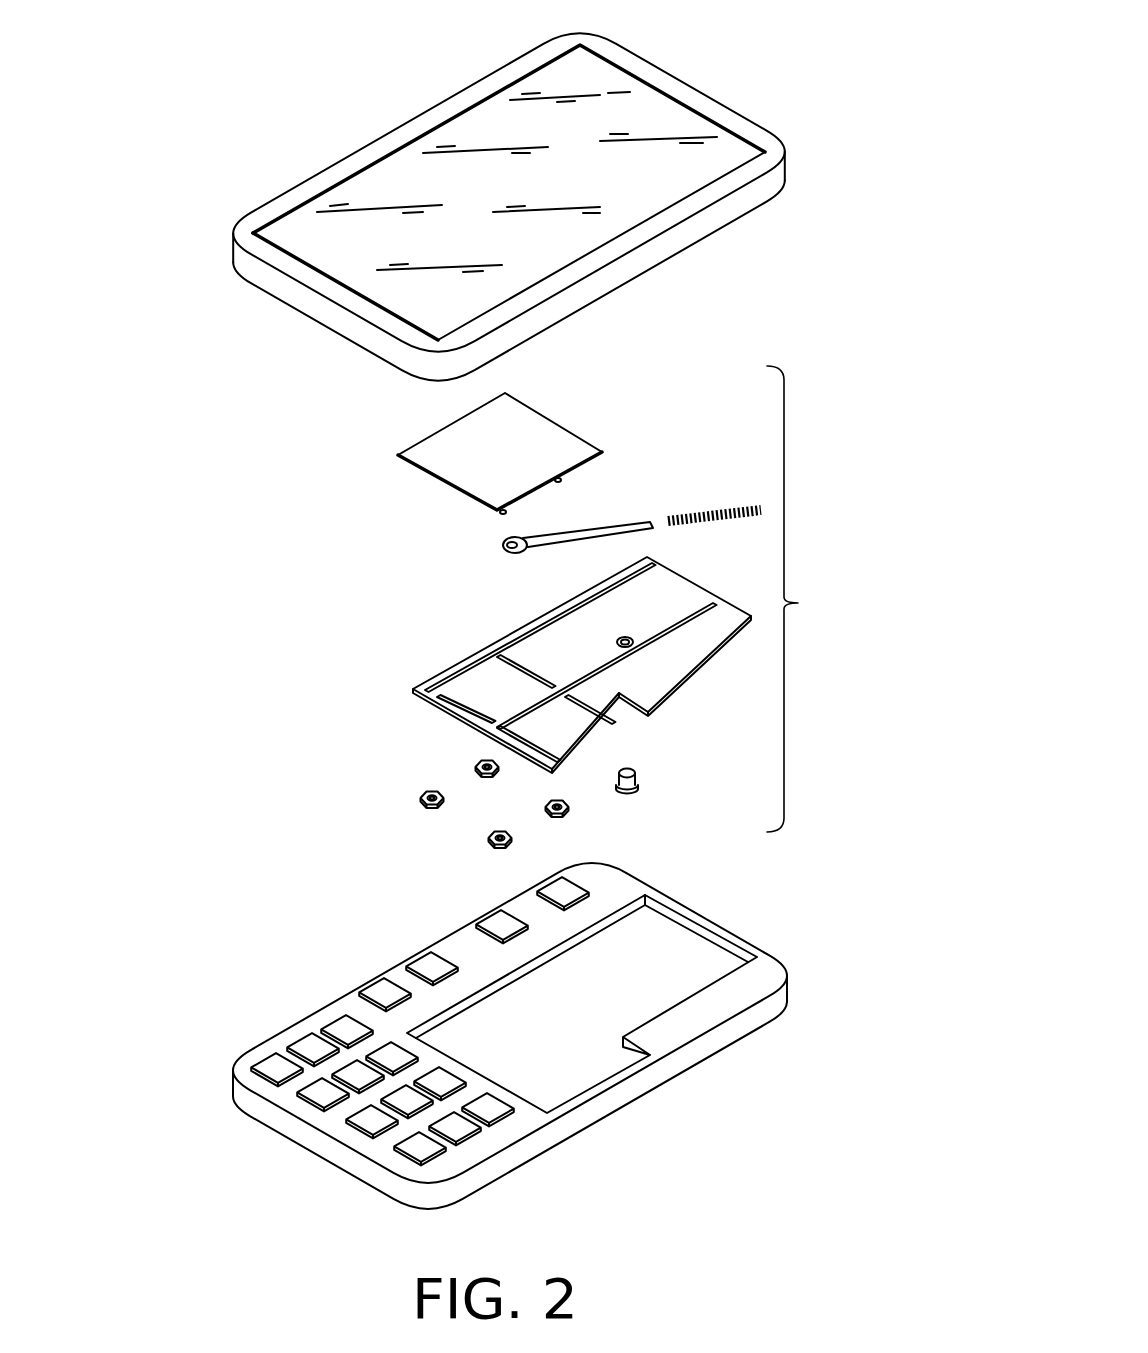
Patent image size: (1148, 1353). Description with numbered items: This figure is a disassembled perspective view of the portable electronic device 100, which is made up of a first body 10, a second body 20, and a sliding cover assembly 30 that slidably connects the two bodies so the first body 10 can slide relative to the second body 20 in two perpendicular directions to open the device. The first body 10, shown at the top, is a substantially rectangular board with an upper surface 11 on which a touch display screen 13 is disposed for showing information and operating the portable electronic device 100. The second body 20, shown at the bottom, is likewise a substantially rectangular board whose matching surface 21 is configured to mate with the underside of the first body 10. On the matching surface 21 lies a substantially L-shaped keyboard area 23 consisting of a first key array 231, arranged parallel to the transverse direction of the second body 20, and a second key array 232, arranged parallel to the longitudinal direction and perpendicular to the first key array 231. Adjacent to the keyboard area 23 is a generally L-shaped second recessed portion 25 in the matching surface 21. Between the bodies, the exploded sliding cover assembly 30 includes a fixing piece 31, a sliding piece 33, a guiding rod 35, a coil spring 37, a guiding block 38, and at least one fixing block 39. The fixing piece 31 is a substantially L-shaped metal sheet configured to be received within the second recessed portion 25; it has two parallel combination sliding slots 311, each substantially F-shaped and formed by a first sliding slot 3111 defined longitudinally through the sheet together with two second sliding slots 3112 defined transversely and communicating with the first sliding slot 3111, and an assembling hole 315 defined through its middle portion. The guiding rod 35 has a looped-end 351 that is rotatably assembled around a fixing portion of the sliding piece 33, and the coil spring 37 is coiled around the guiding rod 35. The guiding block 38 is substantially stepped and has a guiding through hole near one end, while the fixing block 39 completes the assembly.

The portable electronic device 100 is at (497, 604).
The first body 10 is at (519, 206).
The upper surface 11 is at (728, 118).
The touch display screen 13 is at (383, 193).
The second body 20 is at (497, 1036).
The matching surface 21 is at (745, 995).
The keyboard area 23 is at (368, 1021).
The first key array 231 is at (278, 1072).
The second key array 232 is at (387, 993).
The second recessed portion 25 is at (688, 955).
The sliding cover assembly 30 is at (559, 607).
The fixing piece 31 is at (514, 665).
The combination sliding slot 311 is at (466, 647).
The first sliding slot 3111 is at (460, 665).
The second sliding slot 3112 is at (447, 713).
The assembling hole 315 is at (622, 638).
The sliding piece 33 is at (533, 447).
The guiding rod 35 is at (523, 513).
The looped-end 351 is at (507, 543).
The coil spring 37 is at (750, 503).
The guiding block 38 is at (638, 777).
The fixing block 39 is at (568, 808).